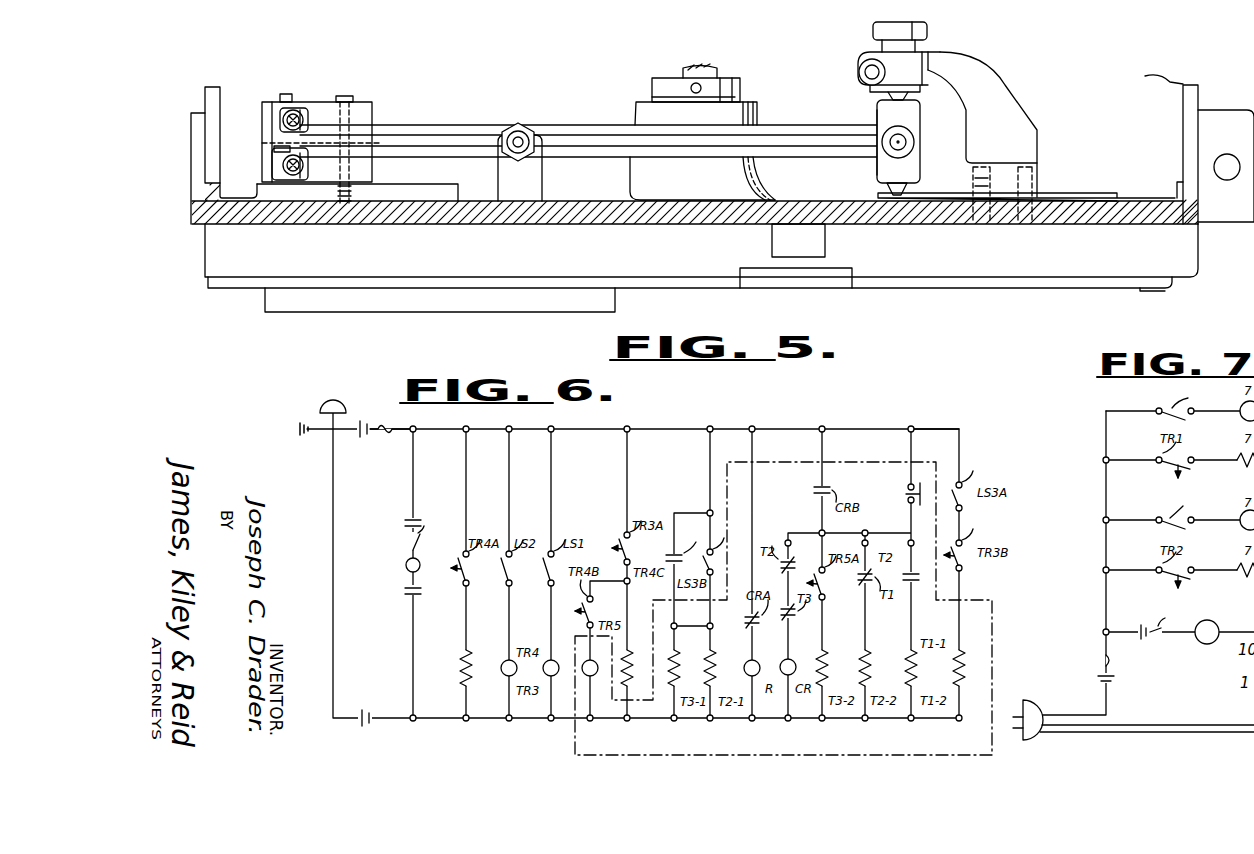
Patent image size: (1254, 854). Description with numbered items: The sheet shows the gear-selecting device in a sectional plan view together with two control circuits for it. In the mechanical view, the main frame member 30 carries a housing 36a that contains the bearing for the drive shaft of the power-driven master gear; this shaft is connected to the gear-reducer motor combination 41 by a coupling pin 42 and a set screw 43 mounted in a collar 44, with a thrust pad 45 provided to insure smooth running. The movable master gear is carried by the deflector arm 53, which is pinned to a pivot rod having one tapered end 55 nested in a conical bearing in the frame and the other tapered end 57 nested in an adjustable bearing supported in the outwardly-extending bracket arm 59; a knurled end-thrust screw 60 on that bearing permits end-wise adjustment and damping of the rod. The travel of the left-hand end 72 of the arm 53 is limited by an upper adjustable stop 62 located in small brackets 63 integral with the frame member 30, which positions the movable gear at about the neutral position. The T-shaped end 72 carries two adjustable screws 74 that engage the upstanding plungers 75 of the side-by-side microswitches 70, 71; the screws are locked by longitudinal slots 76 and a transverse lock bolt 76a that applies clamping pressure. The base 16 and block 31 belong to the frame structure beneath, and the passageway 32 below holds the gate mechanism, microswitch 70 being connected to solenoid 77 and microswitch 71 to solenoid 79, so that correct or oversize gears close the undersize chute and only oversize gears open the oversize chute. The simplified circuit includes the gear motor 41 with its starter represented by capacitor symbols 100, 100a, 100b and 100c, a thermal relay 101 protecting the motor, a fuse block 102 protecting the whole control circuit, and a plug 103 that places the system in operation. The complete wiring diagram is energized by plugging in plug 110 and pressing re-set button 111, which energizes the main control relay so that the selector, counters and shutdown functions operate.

In FIG. 5, the base 16 is at (1055, 252).
In FIG. 5, the main frame member 30 is at (810, 200).
In FIG. 5, the end block 31 is at (1187, 133).
In FIG. 5, the passageway 32 is at (815, 243).
In FIG. 5, the housing 36a is at (750, 123).
In FIG. 5, the coupling pin 42 is at (710, 72).
In FIG. 5, the set screw 43 is at (677, 78).
In FIG. 5, the collar 44 is at (740, 80).
In FIG. 5, the thrust pad 45 is at (742, 95).
In FIG. 5, the deflector arm 53 is at (798, 125).
In FIG. 5, the tapered end 55 is at (890, 188).
In FIG. 5, the tapered end 57 is at (890, 95).
In FIG. 5, the bracket arm 59 is at (1023, 143).
In FIG. 5, the knurled end-thrust screw 60 is at (928, 34).
In FIG. 5, the upper adjustable stop 62 is at (528, 128).
In FIG. 5, the brackets 63 is at (528, 180).
In FIG. 5, the microswitch 70 is at (365, 176).
In FIG. 7, the microswitch 70 is at (1173, 400).
In FIG. 5, the microswitch 71 is at (372, 107).
In FIG. 7, the microswitch 71 is at (1174, 511).
In FIG. 5, the left-hand end 72 is at (259, 144).
In FIG. 5, the adjustable screws 74 is at (303, 112).
In FIG. 5, the plungers 75 is at (347, 100).
In FIG. 5, the longitudinal slots 76 is at (272, 118).
In FIG. 5, the transverse lock bolt 76a is at (292, 101).
In FIG. 6, the solenoid 77 is at (627, 656).
In FIG. 6, the solenoid 79 is at (462, 666).
In FIG. 6, the gear-reducer motor combination 41 is at (404, 566).
In FIG. 7, the gear-reducer motor combination 41 is at (1215, 622).
In FIG. 6, the capacitor symbol 100 is at (404, 523).
In FIG. 7, the capacitor symbol 100 is at (1139, 640).
In FIG. 6, the capacitor symbol 100a is at (404, 590).
In FIG. 6, the capacitor symbol 100b is at (369, 418).
In FIG. 7, the capacitor symbol 100b is at (1116, 682).
In FIG. 6, the capacitor symbol 100c is at (366, 728).
In FIG. 6, the thermal relay 101 is at (404, 537).
In FIG. 7, the thermal relay 101 is at (1168, 618).
In FIG. 6, the fuse block 102 is at (383, 428).
In FIG. 7, the fuse block 102 is at (1100, 660).
In FIG. 7, the plug 103 is at (1075, 688).
In FIG. 6, the plug 110 is at (318, 408).
In FIG. 6, the re-set button 111 is at (905, 493).